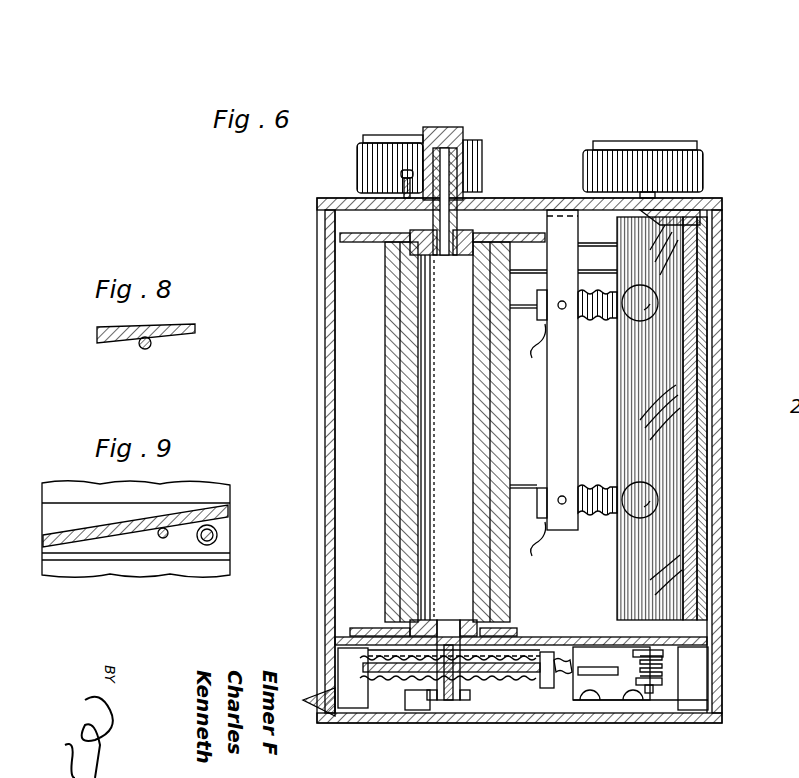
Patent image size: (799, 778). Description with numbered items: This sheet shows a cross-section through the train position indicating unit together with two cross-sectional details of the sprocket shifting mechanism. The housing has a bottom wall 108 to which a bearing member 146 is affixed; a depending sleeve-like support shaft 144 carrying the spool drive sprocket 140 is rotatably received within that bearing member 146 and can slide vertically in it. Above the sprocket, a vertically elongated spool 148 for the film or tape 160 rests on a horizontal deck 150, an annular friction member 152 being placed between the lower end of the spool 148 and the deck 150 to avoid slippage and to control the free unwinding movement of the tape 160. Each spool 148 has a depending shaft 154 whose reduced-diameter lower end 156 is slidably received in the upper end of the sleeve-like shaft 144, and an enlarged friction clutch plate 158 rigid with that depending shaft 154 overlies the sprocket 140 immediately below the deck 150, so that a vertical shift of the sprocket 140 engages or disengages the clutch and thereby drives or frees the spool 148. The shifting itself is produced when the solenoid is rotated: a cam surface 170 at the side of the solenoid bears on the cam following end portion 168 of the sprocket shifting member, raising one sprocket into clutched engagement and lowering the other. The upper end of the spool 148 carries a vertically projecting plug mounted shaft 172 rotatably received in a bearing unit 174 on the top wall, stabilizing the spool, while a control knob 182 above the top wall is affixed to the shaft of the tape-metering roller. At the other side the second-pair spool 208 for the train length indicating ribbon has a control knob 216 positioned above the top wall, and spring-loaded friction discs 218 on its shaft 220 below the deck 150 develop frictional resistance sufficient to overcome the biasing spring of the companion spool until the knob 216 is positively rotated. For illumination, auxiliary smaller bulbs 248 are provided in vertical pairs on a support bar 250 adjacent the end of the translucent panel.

In FIG. 6, the bottom wall 108 is at (532, 716).
In FIG. 6, the spool drive sprocket 140 is at (556, 636).
In FIG. 6, the sleeve-like support shaft 144 is at (450, 696).
In FIG. 6, the bearing member 146 is at (467, 690).
In FIG. 6, the spool 148 is at (388, 476).
In FIG. 6, the deck 150 is at (343, 640).
In FIG. 6, the annular friction member 152 is at (405, 626).
In FIG. 6, the depending shaft 154 is at (453, 622).
In FIG. 6, the lower end 156 is at (417, 685).
In FIG. 6, the friction clutch plate 158 is at (505, 640).
In FIG. 6, the film or tape 160 is at (388, 370).
In FIG. 8, the cam following end portion 168 is at (152, 348).
In FIG. 9, the cam following end portion 168 is at (160, 540).
In FIG. 8, the cam surface 170 is at (110, 345).
In FIG. 9, the cam surface 170 is at (105, 540).
In FIG. 6, the plug mounted shaft 172 is at (446, 190).
In FIG. 6, the bearing unit 174 is at (465, 136).
In FIG. 6, the control knob 182 is at (384, 142).
In FIG. 6, the spool 208 is at (700, 436).
In FIG. 6, the control knob 216 is at (688, 148).
In FIG. 6, the spring-loaded friction discs 218 is at (663, 660).
In FIG. 6, the shaft 220 is at (662, 672).
In FIG. 6, the auxiliary bulbs 248 is at (638, 512).
In FIG. 6, the support bar 250 is at (563, 447).